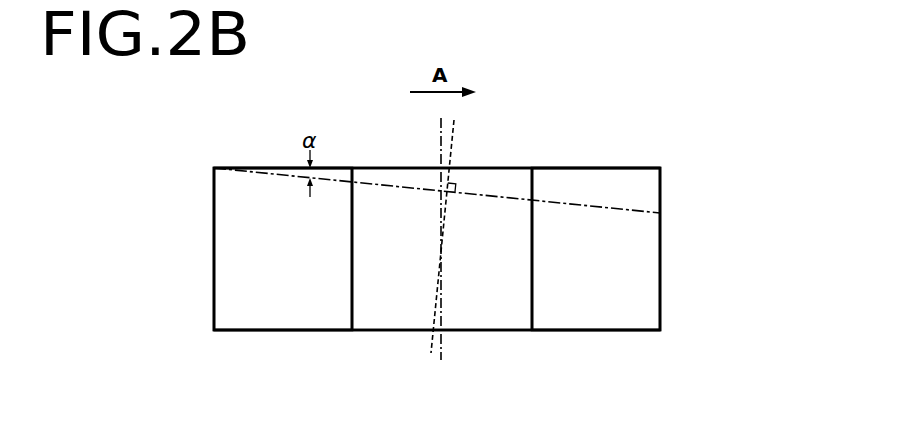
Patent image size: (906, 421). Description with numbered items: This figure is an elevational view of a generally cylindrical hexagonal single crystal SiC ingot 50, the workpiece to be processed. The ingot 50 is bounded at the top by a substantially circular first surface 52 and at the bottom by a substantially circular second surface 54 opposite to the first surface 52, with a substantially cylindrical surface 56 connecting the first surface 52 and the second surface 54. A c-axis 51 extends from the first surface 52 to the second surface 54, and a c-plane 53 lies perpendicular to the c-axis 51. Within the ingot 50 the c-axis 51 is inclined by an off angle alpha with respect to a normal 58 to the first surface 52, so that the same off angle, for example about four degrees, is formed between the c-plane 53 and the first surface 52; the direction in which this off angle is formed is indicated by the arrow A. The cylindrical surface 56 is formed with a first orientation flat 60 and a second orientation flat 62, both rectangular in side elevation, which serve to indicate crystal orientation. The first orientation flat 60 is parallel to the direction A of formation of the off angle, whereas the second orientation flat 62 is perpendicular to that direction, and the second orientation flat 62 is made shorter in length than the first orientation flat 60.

The single crystal SiC ingot 50 is at (209, 190).
The c-axis 51 is at (455, 150).
The first surface 52 is at (605, 168).
The c-plane 53 is at (626, 210).
The second surface 54 is at (237, 331).
The cylindrical surface 56 is at (226, 237).
The normal 58 is at (441, 130).
The first orientation flat 60 is at (490, 303).
The second orientation flat 62 is at (660, 284).